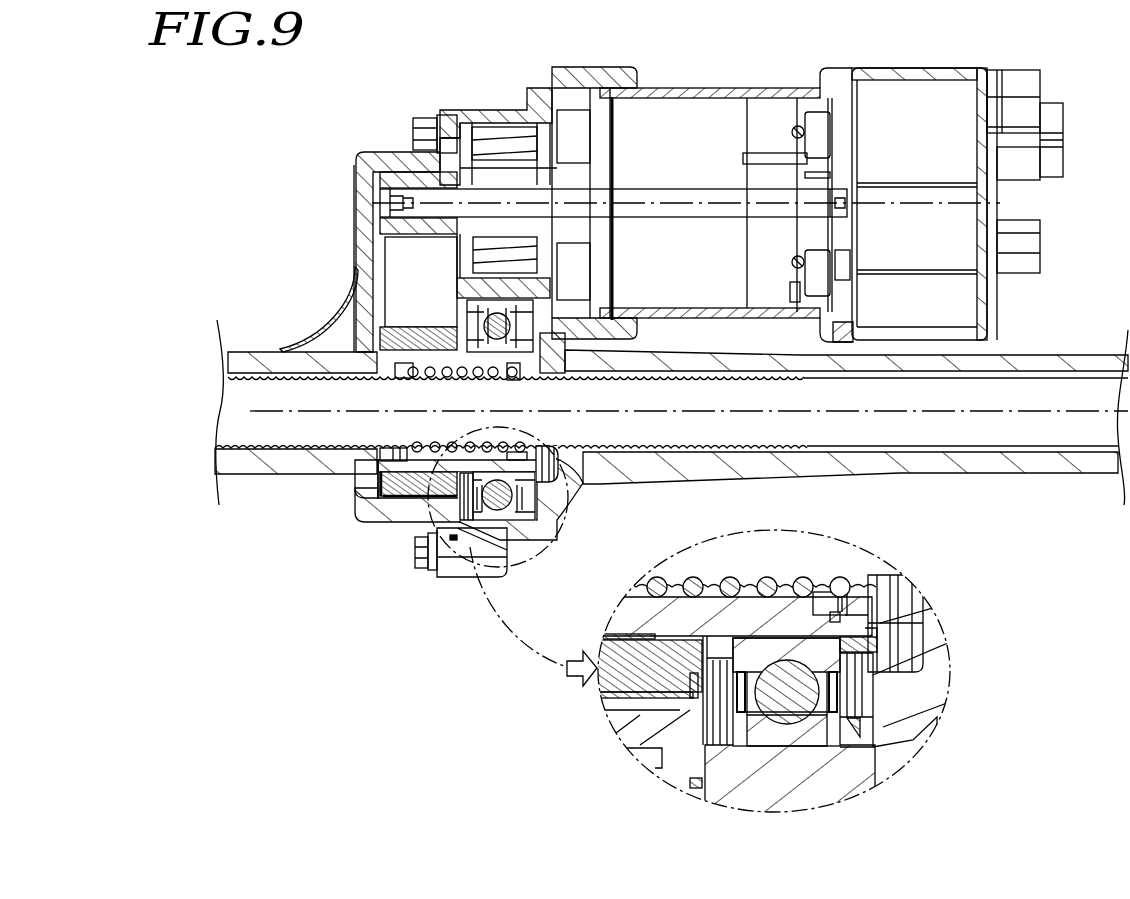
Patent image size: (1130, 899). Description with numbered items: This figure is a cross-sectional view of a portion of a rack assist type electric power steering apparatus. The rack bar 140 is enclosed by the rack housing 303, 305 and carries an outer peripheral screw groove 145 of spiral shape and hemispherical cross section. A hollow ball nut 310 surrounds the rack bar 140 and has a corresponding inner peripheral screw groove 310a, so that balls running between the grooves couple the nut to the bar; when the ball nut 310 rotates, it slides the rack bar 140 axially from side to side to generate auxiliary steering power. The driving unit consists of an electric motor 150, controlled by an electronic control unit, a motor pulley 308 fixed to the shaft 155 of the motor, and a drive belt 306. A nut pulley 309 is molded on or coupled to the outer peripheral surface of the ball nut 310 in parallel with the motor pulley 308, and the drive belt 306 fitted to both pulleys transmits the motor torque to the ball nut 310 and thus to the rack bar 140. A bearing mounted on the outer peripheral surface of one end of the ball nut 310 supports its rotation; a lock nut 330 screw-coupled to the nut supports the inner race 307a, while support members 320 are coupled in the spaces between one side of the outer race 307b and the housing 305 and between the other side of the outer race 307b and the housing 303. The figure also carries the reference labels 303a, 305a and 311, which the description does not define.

The rack bar 140 is at (257, 428).
The outer peripheral screw groove 145 is at (775, 612).
The electric motor 150 is at (777, 65).
The shaft 155 is at (651, 192).
The housing 303 is at (380, 513).
The step portion of bracket 303a is at (661, 763).
The housing 305 is at (562, 482).
The housing ring portion 305a is at (862, 698).
The drive belt 306 is at (400, 320).
The inner race 307a is at (848, 640).
The outer race 307b is at (815, 735).
The motor pulley 308 is at (403, 180).
The nut pulley 309 is at (373, 480).
The ball nut 310 is at (356, 266).
The inner peripheral screw groove 310a is at (810, 580).
The bush 311 is at (655, 632).
The support member 320 is at (690, 697).
The lock nut 330 is at (872, 654).